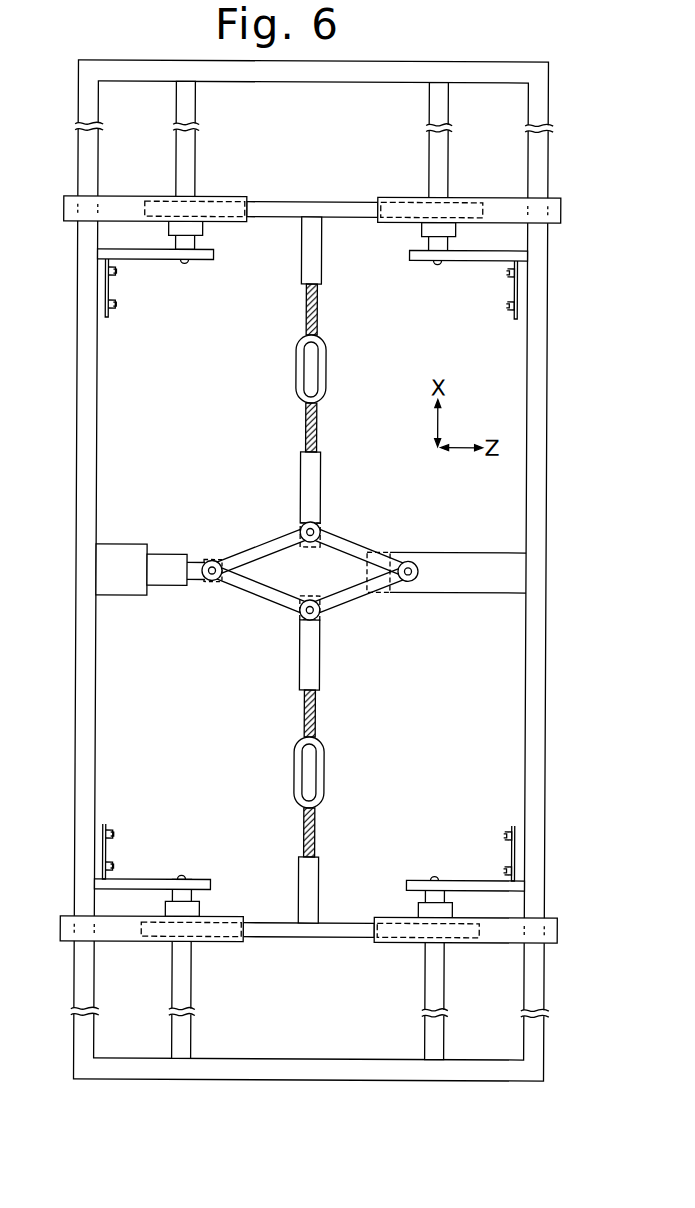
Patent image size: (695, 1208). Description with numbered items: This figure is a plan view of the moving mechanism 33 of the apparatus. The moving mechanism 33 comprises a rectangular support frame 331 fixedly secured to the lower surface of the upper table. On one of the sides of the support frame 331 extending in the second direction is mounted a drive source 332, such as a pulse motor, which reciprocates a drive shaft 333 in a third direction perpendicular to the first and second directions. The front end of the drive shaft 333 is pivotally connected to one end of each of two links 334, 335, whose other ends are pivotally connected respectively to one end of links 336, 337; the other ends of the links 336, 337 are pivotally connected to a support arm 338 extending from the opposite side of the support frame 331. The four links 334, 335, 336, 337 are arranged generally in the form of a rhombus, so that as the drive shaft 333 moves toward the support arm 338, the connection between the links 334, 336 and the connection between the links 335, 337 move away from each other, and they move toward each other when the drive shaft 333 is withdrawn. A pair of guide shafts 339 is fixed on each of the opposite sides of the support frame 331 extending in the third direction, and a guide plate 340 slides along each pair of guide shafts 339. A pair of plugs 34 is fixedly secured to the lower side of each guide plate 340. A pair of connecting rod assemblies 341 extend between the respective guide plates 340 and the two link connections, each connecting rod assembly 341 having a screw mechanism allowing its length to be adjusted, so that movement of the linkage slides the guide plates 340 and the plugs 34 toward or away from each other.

The moving mechanism 33 is at (341, 571).
The support frame 331 is at (547, 357).
The plugs 34 is at (110, 197).
The guide shafts 339 is at (194, 178).
The guide plate 340 is at (288, 202).
The connecting rod assembly 341 is at (316, 432).
The drive source 332 is at (122, 545).
The drive shaft 333 is at (172, 588).
The link 334 is at (255, 543).
The link 335 is at (242, 598).
The link 336 is at (355, 535).
The link 337 is at (364, 598).
The support arm 338 is at (463, 552).